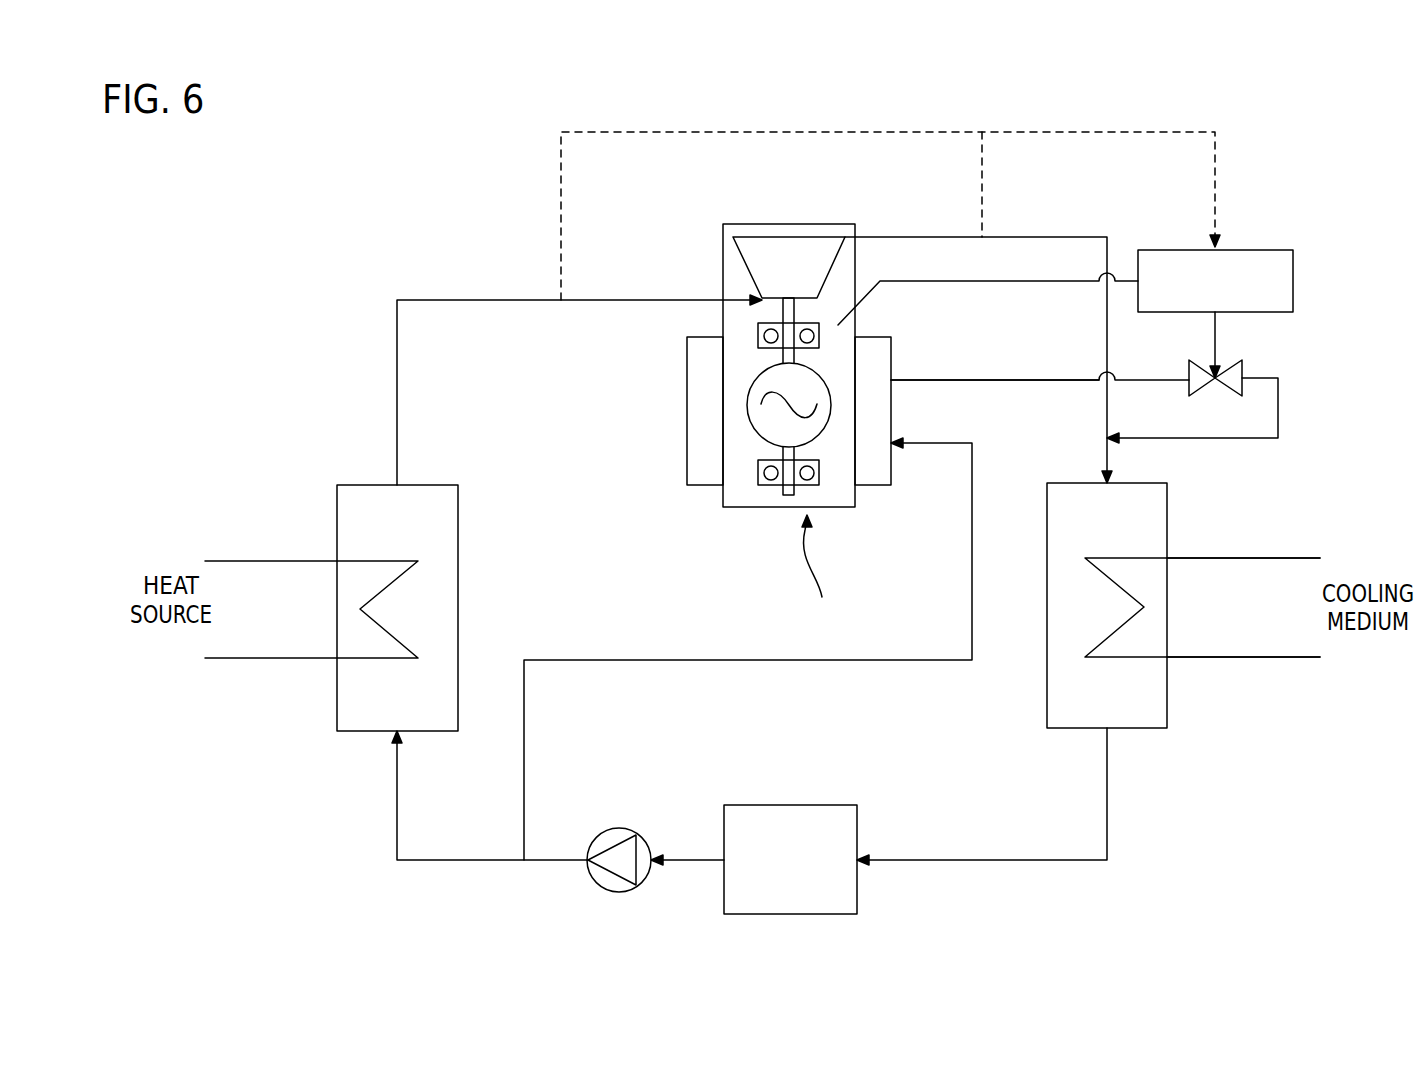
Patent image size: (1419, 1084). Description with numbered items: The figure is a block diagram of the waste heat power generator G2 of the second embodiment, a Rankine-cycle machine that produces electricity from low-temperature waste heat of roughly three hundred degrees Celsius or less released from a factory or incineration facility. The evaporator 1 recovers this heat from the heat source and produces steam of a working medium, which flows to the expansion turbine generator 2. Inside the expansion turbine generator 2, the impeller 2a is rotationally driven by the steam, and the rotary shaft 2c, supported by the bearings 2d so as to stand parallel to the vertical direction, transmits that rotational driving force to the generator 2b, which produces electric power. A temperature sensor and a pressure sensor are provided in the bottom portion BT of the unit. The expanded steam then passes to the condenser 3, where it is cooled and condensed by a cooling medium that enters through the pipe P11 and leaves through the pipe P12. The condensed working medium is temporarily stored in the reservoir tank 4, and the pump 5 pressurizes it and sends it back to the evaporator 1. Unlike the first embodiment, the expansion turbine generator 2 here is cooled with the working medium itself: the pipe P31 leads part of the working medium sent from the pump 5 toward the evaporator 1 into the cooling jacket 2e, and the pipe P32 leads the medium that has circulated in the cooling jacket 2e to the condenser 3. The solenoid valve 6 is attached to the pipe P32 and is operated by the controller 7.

The evaporator 1 is at (337, 498).
The expansion turbine generator 2 is at (737, 224).
The impeller 2a is at (833, 267).
The generator 2b is at (825, 380).
The rotary shaft 2c is at (783, 357).
The bearings 2d is at (758, 330).
The cooling jacket 2e is at (687, 452).
The condenser 3 is at (1135, 730).
The reservoir tank 4 is at (857, 889).
The pump 5 is at (612, 828).
The solenoid valve 6 is at (1242, 370).
The controller 7 is at (1293, 281).
The pipe P31 is at (658, 660).
The pipe P32 is at (1020, 378).
The pipe P11 is at (1297, 556).
The pipe P12 is at (1297, 660).
The bottom portion BT is at (820, 573).
The waste heat power generator G2 is at (1308, 200).